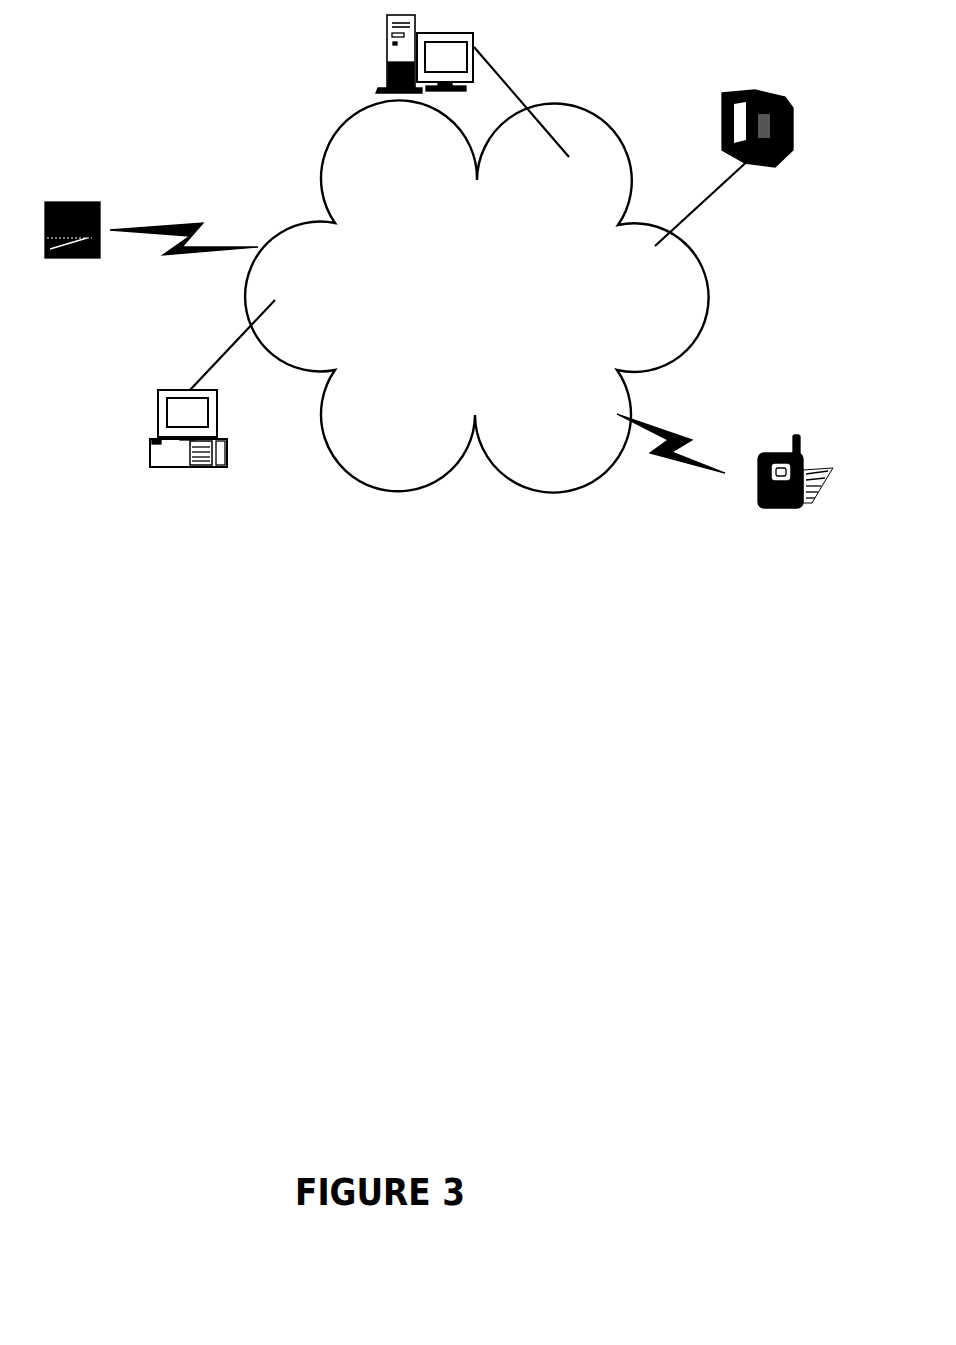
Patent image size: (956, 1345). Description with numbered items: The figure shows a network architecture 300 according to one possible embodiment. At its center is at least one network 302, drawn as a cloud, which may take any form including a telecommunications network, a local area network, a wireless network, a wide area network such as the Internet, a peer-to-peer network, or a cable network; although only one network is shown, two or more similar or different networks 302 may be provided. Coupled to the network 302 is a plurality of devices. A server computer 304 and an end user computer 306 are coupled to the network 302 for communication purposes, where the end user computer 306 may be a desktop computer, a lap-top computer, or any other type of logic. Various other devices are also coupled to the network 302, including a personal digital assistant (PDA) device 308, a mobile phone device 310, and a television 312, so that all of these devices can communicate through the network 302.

The network architecture 300 is at (383, 752).
The network 302 is at (535, 448).
The server computer 304 is at (388, 53).
The end user computer 306 is at (150, 447).
The personal digital assistant (PDA) device 308 is at (72, 202).
The mobile phone device 310 is at (757, 453).
The television 312 is at (738, 84).